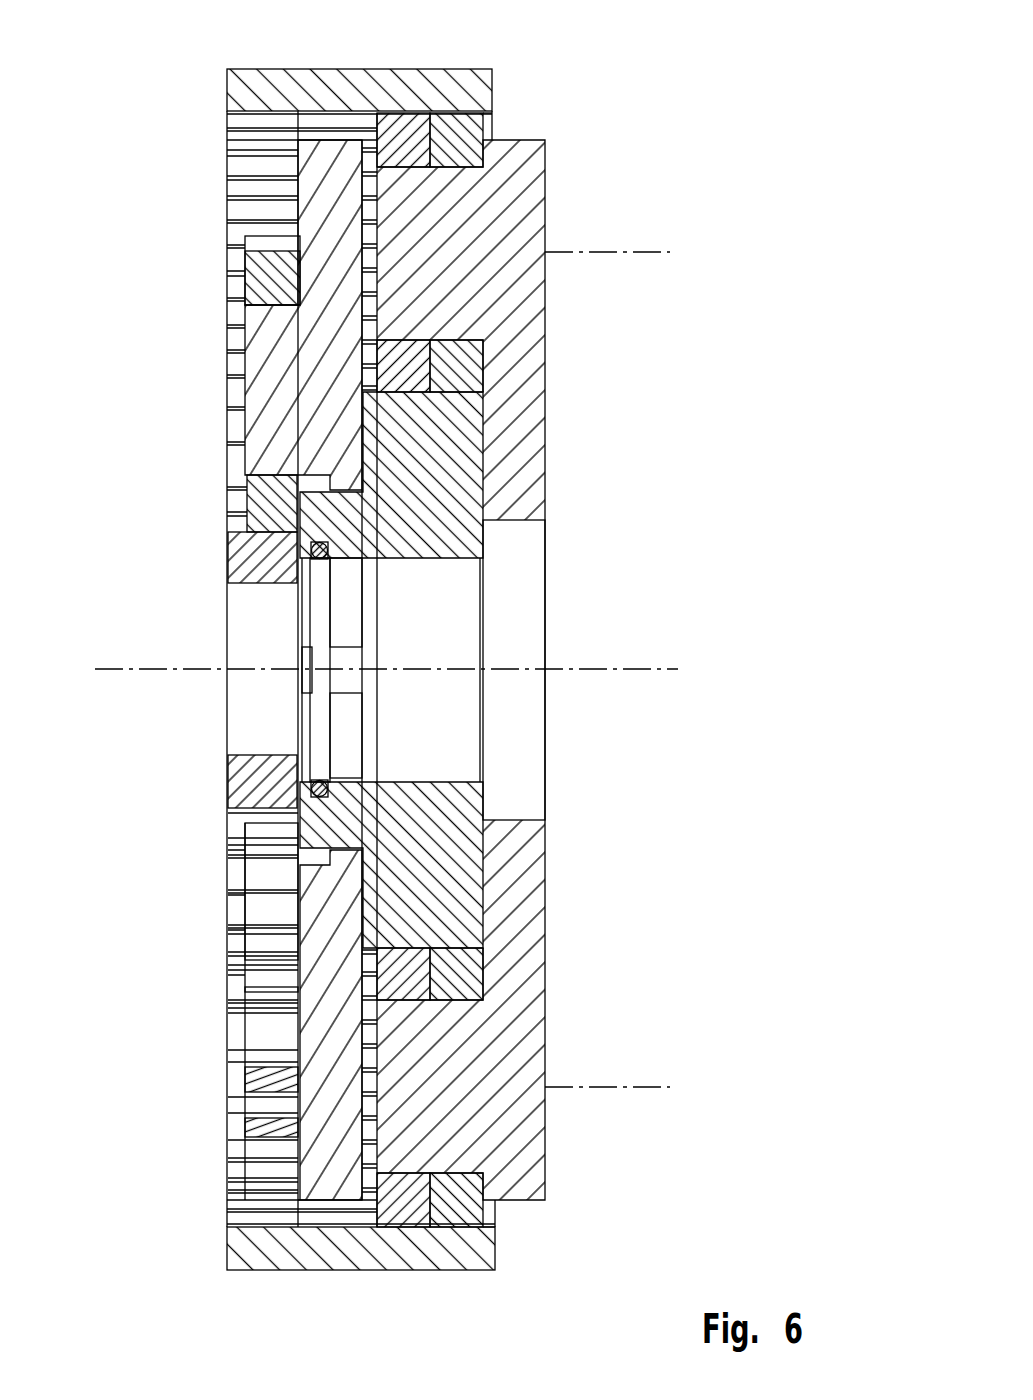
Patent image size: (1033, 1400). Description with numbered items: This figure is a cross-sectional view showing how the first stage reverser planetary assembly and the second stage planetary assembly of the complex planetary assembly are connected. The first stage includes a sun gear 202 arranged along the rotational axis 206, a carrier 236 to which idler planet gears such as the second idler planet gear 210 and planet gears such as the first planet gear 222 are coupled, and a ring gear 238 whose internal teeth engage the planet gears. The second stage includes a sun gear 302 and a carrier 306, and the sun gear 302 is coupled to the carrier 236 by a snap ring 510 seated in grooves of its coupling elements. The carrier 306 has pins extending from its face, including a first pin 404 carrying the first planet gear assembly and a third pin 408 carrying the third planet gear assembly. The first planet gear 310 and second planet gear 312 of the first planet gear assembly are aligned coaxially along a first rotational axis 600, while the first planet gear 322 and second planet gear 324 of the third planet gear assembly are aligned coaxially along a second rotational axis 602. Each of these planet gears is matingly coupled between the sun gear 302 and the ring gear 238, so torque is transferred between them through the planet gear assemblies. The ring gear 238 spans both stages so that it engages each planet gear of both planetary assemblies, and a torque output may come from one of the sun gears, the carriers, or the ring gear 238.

The ring gear 238 is at (280, 68).
The first planet gear 310 is at (410, 128).
The second planet gear 312 is at (458, 128).
The first pin 404 is at (425, 215).
The first rotational axis 600 is at (643, 252).
The carrier 306 is at (510, 285).
The carrier 236 is at (300, 385).
The second idler planet gear 210 is at (253, 503).
The sun gear 202 is at (252, 558).
The snap ring 510 is at (318, 562).
The sun gear 302 is at (413, 555).
The rotational axis 206 is at (652, 668).
The first planet gear 222 is at (250, 1027).
The third pin 408 is at (415, 1055).
The second rotational axis 602 is at (643, 1087).
The first planet gear 322 is at (407, 1203).
The second planet gear 324 is at (457, 1203).